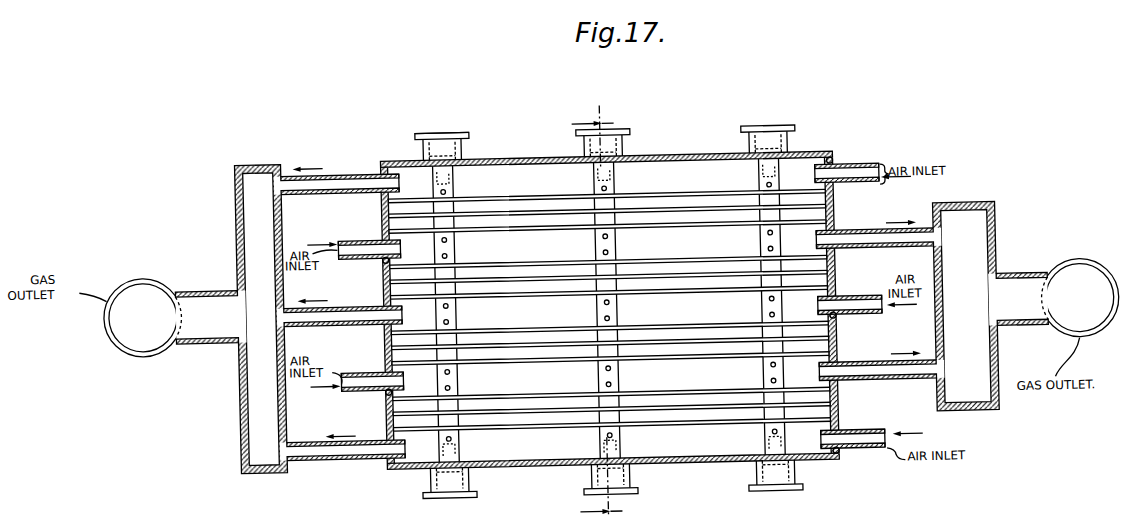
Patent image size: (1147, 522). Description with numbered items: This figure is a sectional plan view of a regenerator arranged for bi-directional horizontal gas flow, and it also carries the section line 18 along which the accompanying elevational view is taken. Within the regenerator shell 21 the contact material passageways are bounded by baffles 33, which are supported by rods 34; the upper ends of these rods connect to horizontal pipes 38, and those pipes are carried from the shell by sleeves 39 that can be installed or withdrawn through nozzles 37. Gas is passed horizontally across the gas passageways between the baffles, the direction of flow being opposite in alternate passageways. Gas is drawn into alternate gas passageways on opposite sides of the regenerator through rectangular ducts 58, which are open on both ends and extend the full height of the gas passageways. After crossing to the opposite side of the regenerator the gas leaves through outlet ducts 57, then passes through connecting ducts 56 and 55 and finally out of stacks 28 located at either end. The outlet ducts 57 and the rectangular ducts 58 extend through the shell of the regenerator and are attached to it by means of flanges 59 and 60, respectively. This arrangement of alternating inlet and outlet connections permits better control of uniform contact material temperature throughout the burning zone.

The section line 18 is at (587, 313).
The regenerator shell 21 is at (392, 157).
The stacks 28 is at (156, 267).
The baffles 33 is at (558, 197).
The rods 34 is at (619, 237).
The nozzles 37 is at (466, 141).
The horizontal pipes 38 is at (457, 176).
The sleeves 39 is at (453, 129).
The connecting ducts 55 is at (209, 323).
The connecting ducts 56 is at (271, 460).
The outlet ducts 57 is at (316, 179).
The rectangular ducts 58 is at (370, 223).
The flanges 59 is at (383, 167).
The flanges 60 is at (384, 258).